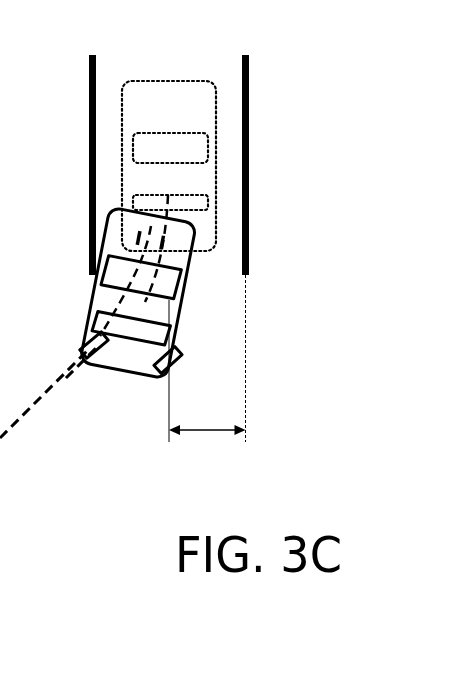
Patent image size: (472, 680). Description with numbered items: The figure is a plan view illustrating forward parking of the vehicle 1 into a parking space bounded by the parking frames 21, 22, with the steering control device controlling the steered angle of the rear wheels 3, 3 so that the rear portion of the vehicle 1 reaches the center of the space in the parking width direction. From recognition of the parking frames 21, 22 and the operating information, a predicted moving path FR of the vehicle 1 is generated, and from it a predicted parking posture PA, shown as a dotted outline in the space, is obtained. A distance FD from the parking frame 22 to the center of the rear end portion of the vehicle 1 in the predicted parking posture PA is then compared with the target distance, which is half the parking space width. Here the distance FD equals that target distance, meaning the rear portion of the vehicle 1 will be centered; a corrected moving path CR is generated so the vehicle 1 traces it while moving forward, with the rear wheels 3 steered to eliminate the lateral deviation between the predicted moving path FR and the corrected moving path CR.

The vehicle 1 is at (92, 316).
The rear wheels 3 is at (82, 345).
The parking frame 21 is at (89, 96).
The parking frame 22 is at (249, 241).
The predicted parking posture PA is at (168, 85).
The predicted moving path FR is at (140, 238).
The corrected moving path CR is at (170, 308).
The distance FD is at (215, 448).